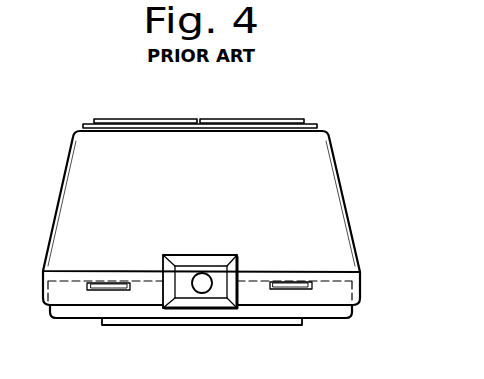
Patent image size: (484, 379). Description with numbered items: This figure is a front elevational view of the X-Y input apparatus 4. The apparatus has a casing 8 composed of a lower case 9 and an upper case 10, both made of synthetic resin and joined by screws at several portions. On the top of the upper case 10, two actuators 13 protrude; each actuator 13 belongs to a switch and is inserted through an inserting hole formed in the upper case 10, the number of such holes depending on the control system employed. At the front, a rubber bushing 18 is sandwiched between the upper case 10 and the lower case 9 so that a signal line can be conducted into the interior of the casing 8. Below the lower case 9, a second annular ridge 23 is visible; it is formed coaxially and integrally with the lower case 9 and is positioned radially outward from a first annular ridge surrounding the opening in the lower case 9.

The X-Y input apparatus 4 is at (239, 216).
The casing 8 is at (239, 224).
The upper case 10 is at (345, 255).
The lower case 9 is at (229, 299).
The actuator 13 is at (132, 118).
The rubber bushing 18 is at (212, 295).
The second annular ridge 23 is at (277, 327).